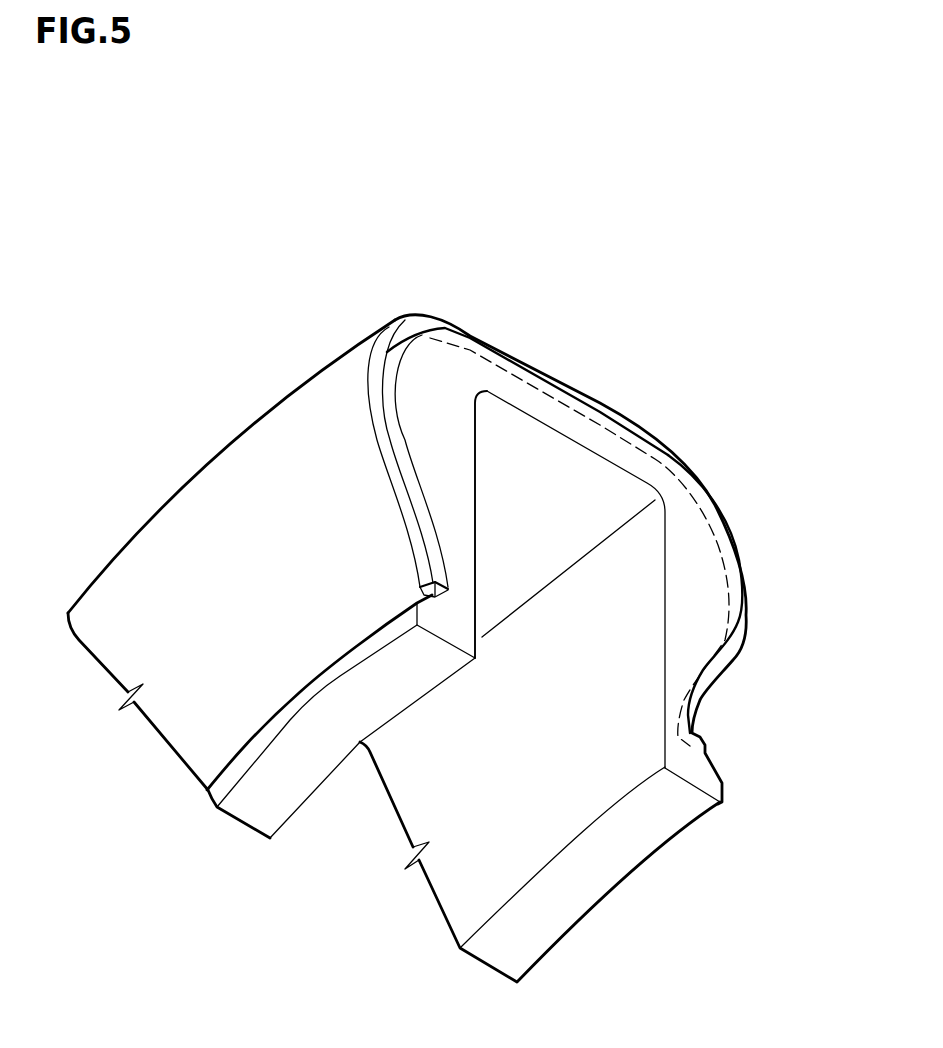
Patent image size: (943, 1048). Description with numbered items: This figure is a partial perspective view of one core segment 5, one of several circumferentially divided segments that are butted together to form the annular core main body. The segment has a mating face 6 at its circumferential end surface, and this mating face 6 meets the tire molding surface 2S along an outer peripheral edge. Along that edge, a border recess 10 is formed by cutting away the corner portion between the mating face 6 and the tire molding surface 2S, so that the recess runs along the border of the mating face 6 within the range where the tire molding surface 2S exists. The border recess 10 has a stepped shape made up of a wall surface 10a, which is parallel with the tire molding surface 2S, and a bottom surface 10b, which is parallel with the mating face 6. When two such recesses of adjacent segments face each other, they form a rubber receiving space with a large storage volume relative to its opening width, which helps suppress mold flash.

The core segment 5 is at (256, 364).
The tire molding surface 2S is at (188, 533).
The mating face 6 is at (692, 530).
The border recess 10 is at (417, 395).
The wall surface 10a is at (405, 465).
The bottom surface 10b is at (382, 427).